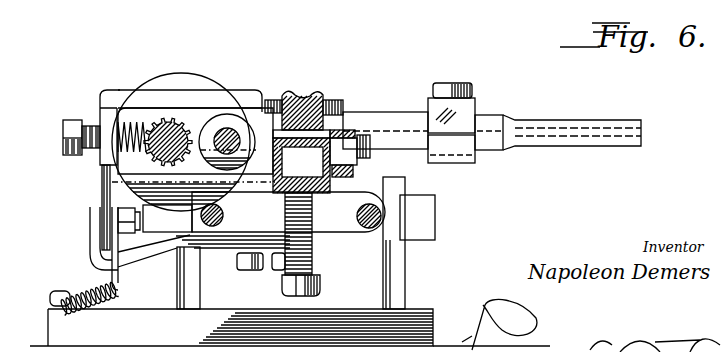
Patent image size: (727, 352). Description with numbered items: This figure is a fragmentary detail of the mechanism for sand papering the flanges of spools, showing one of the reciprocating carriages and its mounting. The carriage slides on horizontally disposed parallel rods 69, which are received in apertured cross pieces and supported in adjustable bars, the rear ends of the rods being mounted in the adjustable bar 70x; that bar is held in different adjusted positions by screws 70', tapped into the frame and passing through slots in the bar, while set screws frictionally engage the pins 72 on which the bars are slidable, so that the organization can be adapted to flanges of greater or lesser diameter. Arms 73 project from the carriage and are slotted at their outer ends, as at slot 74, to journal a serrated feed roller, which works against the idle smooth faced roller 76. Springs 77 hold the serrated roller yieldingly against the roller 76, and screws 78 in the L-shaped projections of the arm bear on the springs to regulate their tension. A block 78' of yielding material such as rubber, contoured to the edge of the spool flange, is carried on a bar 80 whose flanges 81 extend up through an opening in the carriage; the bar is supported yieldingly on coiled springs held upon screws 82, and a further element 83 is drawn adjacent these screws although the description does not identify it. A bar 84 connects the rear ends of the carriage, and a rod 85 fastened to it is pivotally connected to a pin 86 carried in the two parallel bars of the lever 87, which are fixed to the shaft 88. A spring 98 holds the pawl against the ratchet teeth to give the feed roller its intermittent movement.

The horizontally disposed parallel rods 69 is at (225, 215).
The screws 70' is at (95, 238).
The adjustable bar 70x is at (422, 236).
The pins 72 is at (200, 296).
The arms 73 is at (163, 98).
The slot 74 is at (125, 86).
The smooth faced roller 76 is at (240, 125).
The springs 77 is at (112, 168).
The screws 78 is at (62, 156).
The block of yielding material 78' is at (318, 92).
The bar 80 is at (295, 177).
The flanges 81 is at (333, 102).
The screws 82 is at (322, 284).
The lock nuts 83 is at (278, 275).
The bar 84 is at (488, 151).
The rod 85 is at (465, 110).
The pin 86 is at (455, 82).
The lever 87 is at (415, 112).
The shaft 88 is at (488, 112).
The spring 98 is at (290, 314).